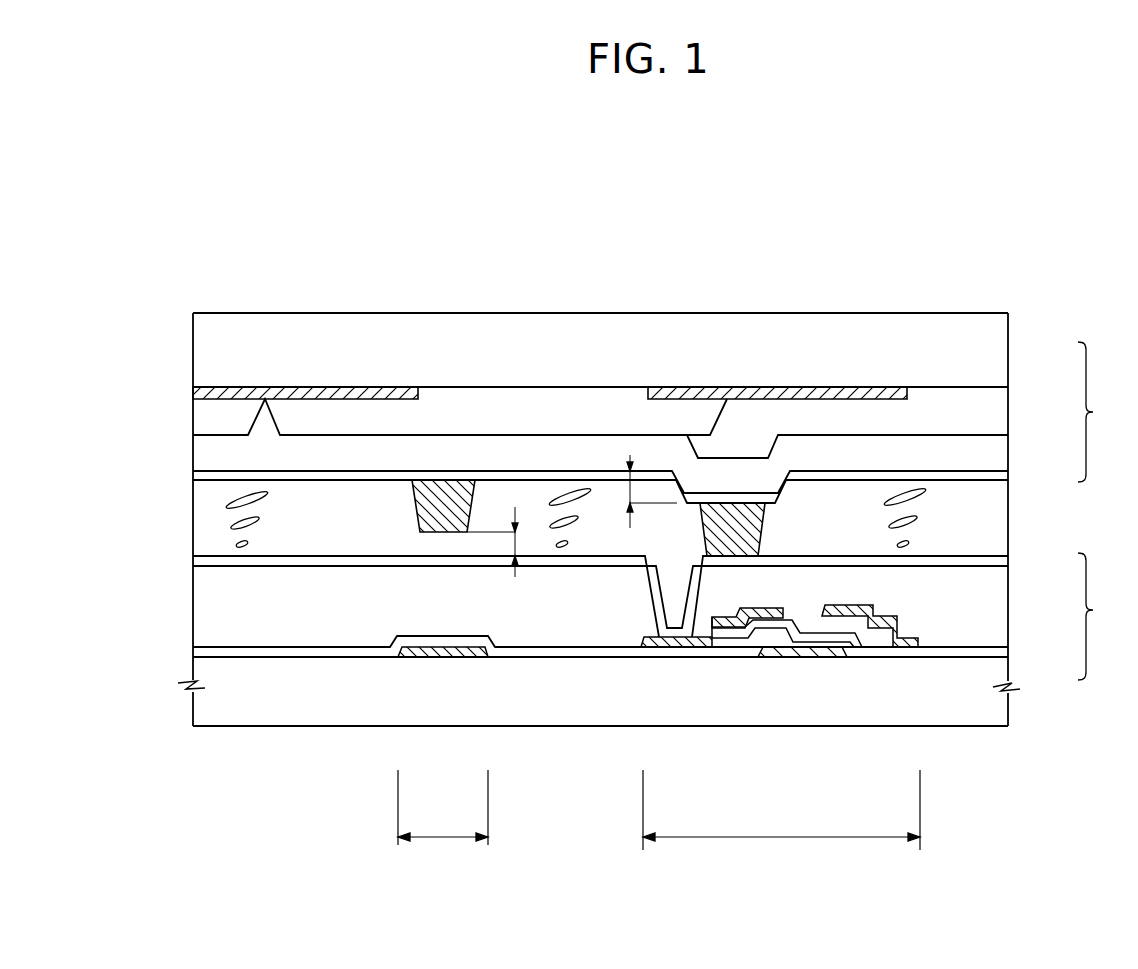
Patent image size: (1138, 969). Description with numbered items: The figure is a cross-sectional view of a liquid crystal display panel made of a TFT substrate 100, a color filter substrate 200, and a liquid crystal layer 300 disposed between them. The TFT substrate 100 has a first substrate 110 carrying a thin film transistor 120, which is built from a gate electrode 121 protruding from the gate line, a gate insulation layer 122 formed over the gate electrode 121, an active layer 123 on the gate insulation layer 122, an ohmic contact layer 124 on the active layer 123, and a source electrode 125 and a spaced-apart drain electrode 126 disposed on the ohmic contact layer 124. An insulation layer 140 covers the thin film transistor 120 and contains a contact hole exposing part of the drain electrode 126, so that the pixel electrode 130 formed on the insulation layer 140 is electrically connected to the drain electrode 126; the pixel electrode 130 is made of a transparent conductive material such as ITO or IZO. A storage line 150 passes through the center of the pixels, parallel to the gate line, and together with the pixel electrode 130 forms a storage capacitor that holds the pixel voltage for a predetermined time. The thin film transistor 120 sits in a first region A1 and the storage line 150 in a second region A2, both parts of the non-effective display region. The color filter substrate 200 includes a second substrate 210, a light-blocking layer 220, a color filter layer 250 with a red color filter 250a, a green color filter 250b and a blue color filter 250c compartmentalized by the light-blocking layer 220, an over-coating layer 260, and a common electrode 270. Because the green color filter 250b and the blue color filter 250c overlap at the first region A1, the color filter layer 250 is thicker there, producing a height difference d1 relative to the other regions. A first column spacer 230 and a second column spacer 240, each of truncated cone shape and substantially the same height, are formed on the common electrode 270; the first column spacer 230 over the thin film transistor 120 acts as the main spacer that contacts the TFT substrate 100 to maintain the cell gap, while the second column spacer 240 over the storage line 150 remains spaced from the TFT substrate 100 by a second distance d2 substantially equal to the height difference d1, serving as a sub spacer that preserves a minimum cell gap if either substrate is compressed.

The TFT substrate 100 is at (655, 676).
The first substrate 110 is at (1003, 670).
The thin film transistor 120 is at (781, 703).
The gate electrode 121 is at (839, 704).
The gate insulation layer 122 is at (747, 640).
The active layer 123 is at (742, 640).
The ohmic contact layer 124 is at (796, 640).
The source electrode 125 is at (812, 640).
The drain electrode 126 is at (693, 645).
The pixel electrode 130 is at (1003, 560).
The insulation layer 140 is at (1003, 607).
The storage line 150 is at (442, 650).
The color filter substrate 200 is at (662, 384).
The second substrate 210 is at (1003, 350).
The light-blocking layer 220 is at (907, 393).
The first column spacer 230 is at (706, 530).
The second column spacer 240 is at (418, 503).
The color filter layer 250 is at (1010, 423).
The red color filter 250a is at (223, 402).
The green color filter 250b is at (435, 396).
The blue color filter 250c is at (753, 412).
The over-coating layer 260 is at (1003, 452).
The common electrode 270 is at (1003, 475).
The liquid crystal layer 300 is at (1003, 520).
The height difference d1 is at (641, 491).
The second distance d2 is at (506, 542).
The first region A1 is at (781, 810).
The second region A2 is at (443, 807).